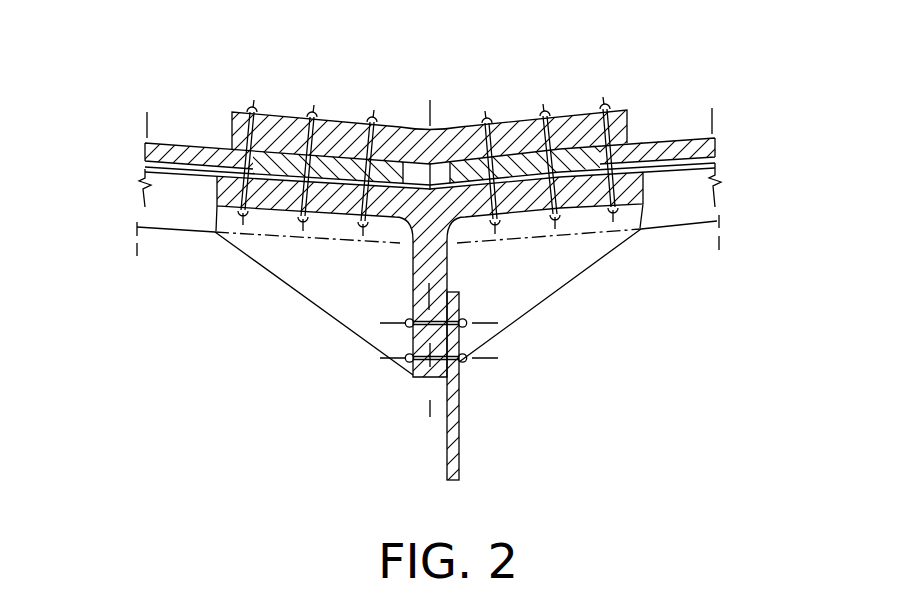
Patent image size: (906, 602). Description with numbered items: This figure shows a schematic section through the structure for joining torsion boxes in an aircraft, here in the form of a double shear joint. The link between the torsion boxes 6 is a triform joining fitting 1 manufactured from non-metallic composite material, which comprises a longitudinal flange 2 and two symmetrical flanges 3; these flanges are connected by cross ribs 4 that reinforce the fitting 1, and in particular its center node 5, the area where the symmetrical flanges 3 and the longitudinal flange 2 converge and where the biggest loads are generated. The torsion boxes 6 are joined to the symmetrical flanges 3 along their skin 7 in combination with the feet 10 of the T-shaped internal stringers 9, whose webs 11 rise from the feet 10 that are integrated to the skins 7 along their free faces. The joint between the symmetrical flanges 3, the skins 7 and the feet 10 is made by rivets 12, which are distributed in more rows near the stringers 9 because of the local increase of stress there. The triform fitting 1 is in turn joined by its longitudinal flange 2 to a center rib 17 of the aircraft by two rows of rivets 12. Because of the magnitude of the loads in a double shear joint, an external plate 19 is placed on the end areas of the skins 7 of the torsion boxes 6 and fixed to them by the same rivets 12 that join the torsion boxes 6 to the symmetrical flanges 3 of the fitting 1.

The triform joining fitting 1 is at (213, 197).
The longitudinal flange 2 is at (421, 296).
The symmetrical flanges 3 is at (282, 207).
The cross ribs 4 is at (327, 292).
The center node 5 is at (422, 198).
The torsion boxes 6 is at (173, 142).
The skin 7 is at (199, 158).
The internal stringers 9 is at (181, 232).
The feet 10 is at (144, 167).
The webs 11 is at (150, 207).
The rivets 12 is at (312, 113).
The center rib 17 is at (452, 428).
The external plate 19 is at (445, 127).